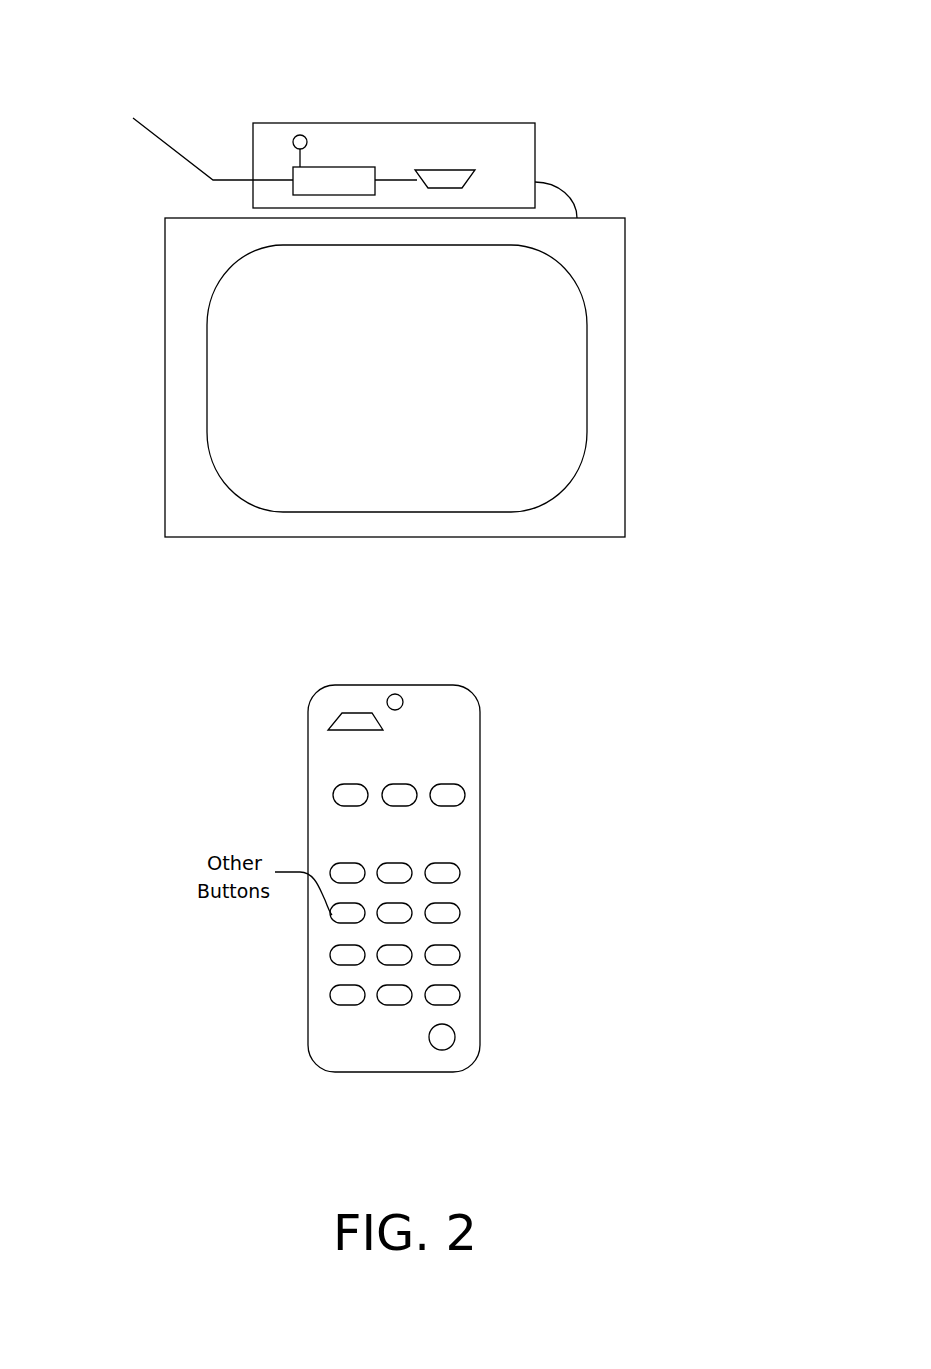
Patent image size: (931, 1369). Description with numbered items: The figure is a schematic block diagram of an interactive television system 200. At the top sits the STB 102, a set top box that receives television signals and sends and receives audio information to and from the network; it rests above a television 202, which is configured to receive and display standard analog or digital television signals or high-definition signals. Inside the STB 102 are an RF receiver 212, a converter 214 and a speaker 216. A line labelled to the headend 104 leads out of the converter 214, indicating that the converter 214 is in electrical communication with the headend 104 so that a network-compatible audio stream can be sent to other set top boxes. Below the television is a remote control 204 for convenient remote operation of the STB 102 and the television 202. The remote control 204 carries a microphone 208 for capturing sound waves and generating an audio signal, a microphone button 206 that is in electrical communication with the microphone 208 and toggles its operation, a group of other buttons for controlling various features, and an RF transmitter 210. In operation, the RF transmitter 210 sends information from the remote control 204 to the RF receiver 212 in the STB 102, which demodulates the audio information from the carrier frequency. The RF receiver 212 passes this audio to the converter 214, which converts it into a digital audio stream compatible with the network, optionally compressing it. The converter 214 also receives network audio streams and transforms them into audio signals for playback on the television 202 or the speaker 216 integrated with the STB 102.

The interactive television system 200 is at (822, 110).
The STB 102 is at (415, 170).
The headend 104 is at (191, 137).
The television 202 is at (395, 377).
The remote control 204 is at (480, 825).
The microphone button 206 is at (455, 1037).
The microphone 208 is at (403, 702).
The RF transmitter 210 is at (350, 713).
The RF receiver 212 is at (462, 180).
The converter 214 is at (337, 167).
The speaker 216 is at (295, 137).